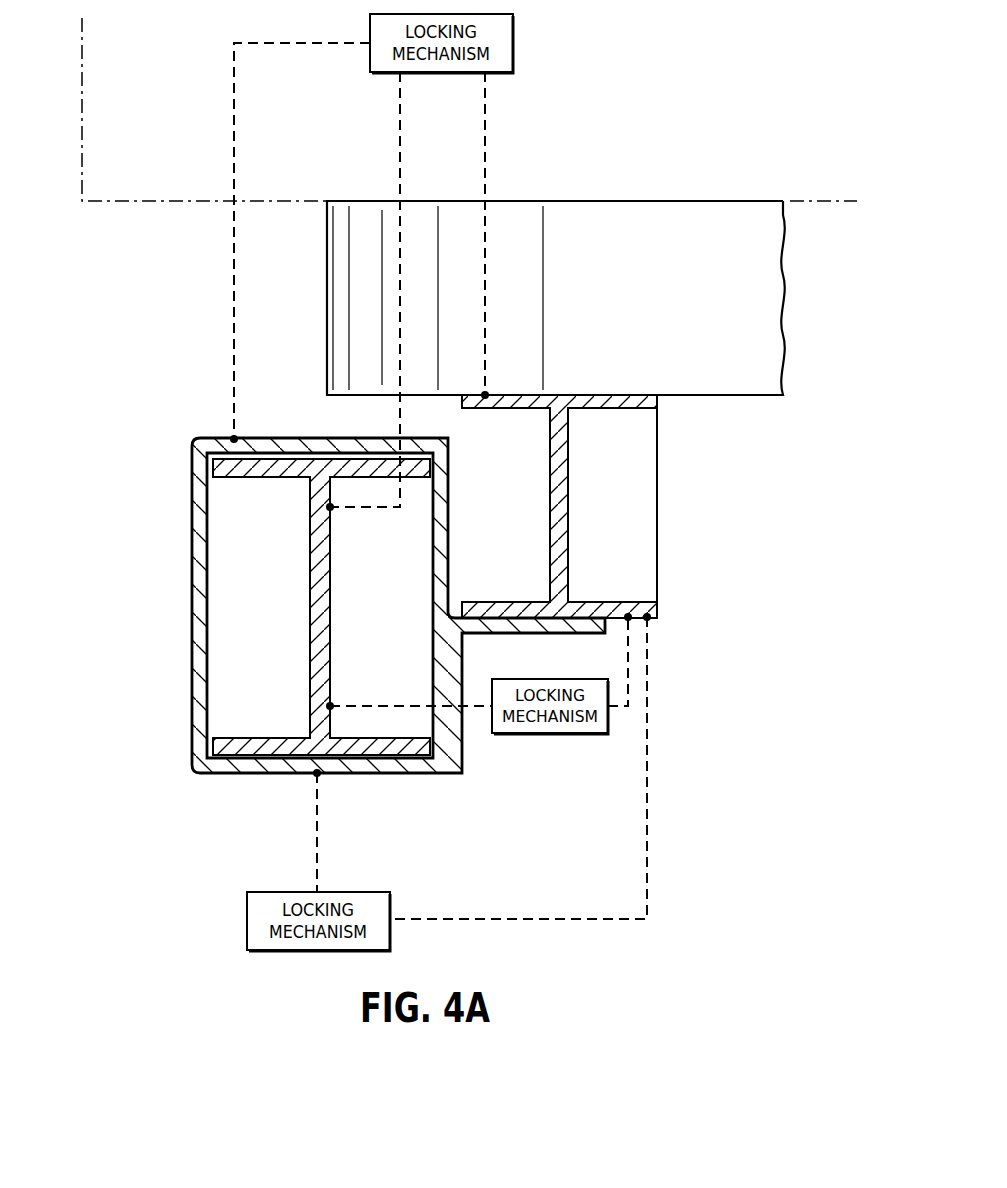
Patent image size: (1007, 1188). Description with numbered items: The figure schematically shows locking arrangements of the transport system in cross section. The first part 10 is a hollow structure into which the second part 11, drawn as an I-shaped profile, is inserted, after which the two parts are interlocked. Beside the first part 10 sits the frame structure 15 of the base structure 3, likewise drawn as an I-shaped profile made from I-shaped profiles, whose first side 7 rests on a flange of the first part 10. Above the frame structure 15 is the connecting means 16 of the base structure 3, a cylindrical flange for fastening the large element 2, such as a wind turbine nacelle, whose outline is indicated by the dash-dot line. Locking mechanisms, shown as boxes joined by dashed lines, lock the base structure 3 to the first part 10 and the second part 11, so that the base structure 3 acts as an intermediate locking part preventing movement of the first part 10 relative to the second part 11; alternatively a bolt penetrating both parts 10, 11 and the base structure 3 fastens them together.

The large element 2 is at (82, 107).
The base structure 3 is at (797, 266).
The first side of the base structure 7 is at (650, 519).
The first part 10 is at (199, 432).
The second part 11 is at (338, 627).
The frame structure 15 is at (584, 388).
The connecting means 16 is at (327, 268).